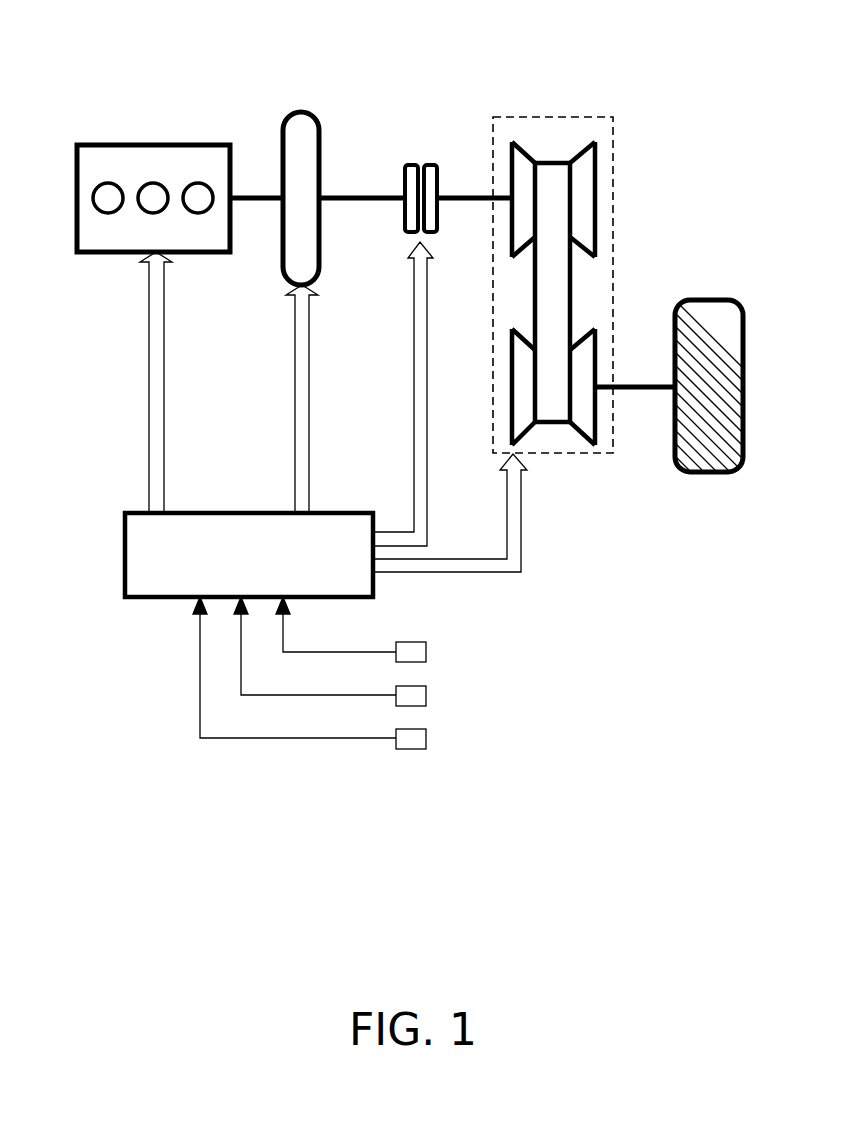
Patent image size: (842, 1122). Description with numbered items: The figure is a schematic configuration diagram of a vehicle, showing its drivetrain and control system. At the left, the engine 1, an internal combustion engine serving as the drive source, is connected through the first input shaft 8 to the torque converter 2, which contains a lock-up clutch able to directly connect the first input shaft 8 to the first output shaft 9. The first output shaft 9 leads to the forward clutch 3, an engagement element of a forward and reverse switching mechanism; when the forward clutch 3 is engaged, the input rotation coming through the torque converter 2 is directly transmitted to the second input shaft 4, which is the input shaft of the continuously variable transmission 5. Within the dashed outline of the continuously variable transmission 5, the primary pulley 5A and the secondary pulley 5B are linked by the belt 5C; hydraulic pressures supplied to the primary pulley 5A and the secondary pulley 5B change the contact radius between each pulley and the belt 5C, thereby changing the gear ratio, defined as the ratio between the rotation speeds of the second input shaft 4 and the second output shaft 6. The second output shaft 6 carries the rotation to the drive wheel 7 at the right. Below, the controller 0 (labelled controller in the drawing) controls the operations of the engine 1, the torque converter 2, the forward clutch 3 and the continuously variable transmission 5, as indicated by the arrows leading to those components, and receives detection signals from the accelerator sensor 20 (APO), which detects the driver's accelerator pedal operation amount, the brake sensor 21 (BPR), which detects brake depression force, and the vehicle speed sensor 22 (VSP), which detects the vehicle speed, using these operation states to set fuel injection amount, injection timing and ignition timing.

The controller 0 is at (125, 548).
The engine 1 is at (152, 145).
The torque converter 2 is at (300, 112).
The forward clutch 3 is at (418, 142).
The second input shaft 4 is at (475, 195).
The continuously variable transmission 5 is at (575, 117).
The primary pulley 5A is at (598, 163).
The secondary pulley 5B is at (585, 448).
The belt 5C is at (572, 295).
The second output shaft 6 is at (636, 390).
The drive wheel 7 is at (725, 300).
The first input shaft 8 is at (252, 195).
The first output shaft 9 is at (358, 195).
The accelerator sensor 20 is at (426, 652).
The brake sensor 21 is at (426, 695).
The vehicle speed sensor 22 is at (426, 738).